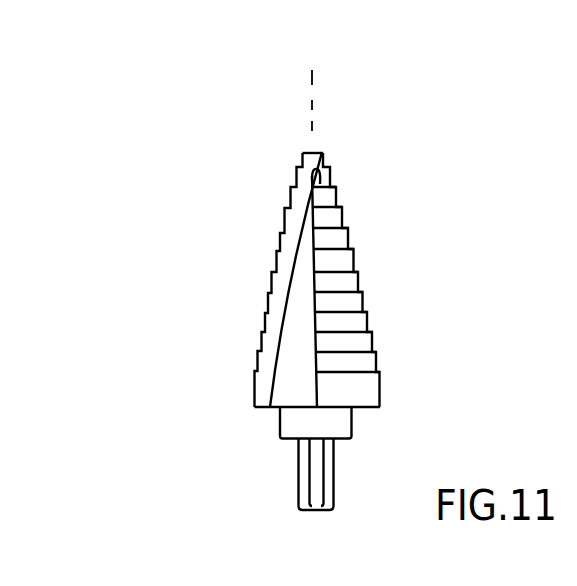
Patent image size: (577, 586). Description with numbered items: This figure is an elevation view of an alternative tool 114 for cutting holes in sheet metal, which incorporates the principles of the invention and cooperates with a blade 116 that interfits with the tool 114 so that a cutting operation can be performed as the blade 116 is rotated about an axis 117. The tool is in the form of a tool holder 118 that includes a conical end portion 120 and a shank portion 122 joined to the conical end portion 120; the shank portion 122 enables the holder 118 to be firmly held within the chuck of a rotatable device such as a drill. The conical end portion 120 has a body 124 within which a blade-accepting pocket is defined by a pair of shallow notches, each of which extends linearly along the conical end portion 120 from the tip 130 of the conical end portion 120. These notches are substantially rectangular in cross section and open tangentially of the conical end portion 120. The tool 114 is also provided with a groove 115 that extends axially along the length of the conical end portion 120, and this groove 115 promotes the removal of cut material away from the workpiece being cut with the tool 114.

The tool 114 is at (400, 218).
The groove 115 is at (298, 363).
The blade 116 is at (287, 226).
The axis 117 is at (312, 82).
The tool holder 118 is at (350, 399).
The conical end portion 120 is at (328, 325).
The shank portion 122 is at (335, 483).
The body 124 is at (343, 362).
The tip 130 is at (320, 152).